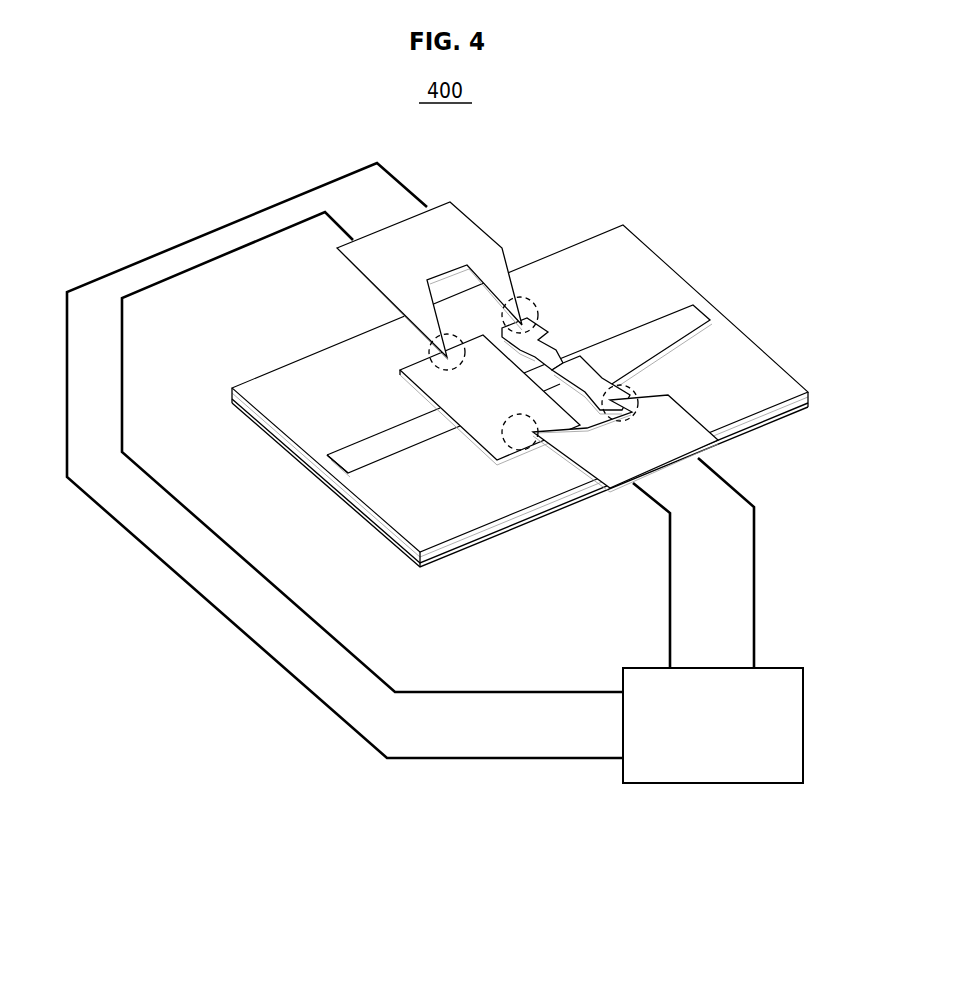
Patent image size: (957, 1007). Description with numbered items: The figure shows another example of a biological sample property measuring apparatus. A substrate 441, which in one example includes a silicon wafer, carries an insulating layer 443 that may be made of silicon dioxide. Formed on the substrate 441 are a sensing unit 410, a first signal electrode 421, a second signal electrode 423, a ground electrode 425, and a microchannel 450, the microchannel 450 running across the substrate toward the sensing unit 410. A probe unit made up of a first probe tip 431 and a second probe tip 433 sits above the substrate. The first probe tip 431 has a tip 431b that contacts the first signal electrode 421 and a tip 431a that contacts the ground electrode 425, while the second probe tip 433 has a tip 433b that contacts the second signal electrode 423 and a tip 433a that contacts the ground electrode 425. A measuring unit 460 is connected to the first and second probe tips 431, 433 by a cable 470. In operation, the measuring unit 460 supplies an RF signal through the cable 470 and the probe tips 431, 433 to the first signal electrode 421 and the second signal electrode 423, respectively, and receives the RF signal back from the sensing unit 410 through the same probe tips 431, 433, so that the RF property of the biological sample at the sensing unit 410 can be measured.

The sensing unit 410 is at (570, 366).
The first signal electrode 421 is at (570, 356).
The second signal electrode 423 is at (605, 395).
The ground electrode 425 is at (485, 428).
The first probe tip 431 is at (450, 206).
The tip 431a is at (430, 353).
The tip 431b is at (526, 298).
The second probe tip 433 is at (705, 442).
The tip 433a is at (522, 450).
The tip 433b is at (623, 396).
The substrate 441 is at (240, 418).
The insulating layer 443 is at (395, 548).
The microchannel 450 is at (340, 457).
The measuring unit 460 is at (713, 783).
The cable 470 is at (253, 560).